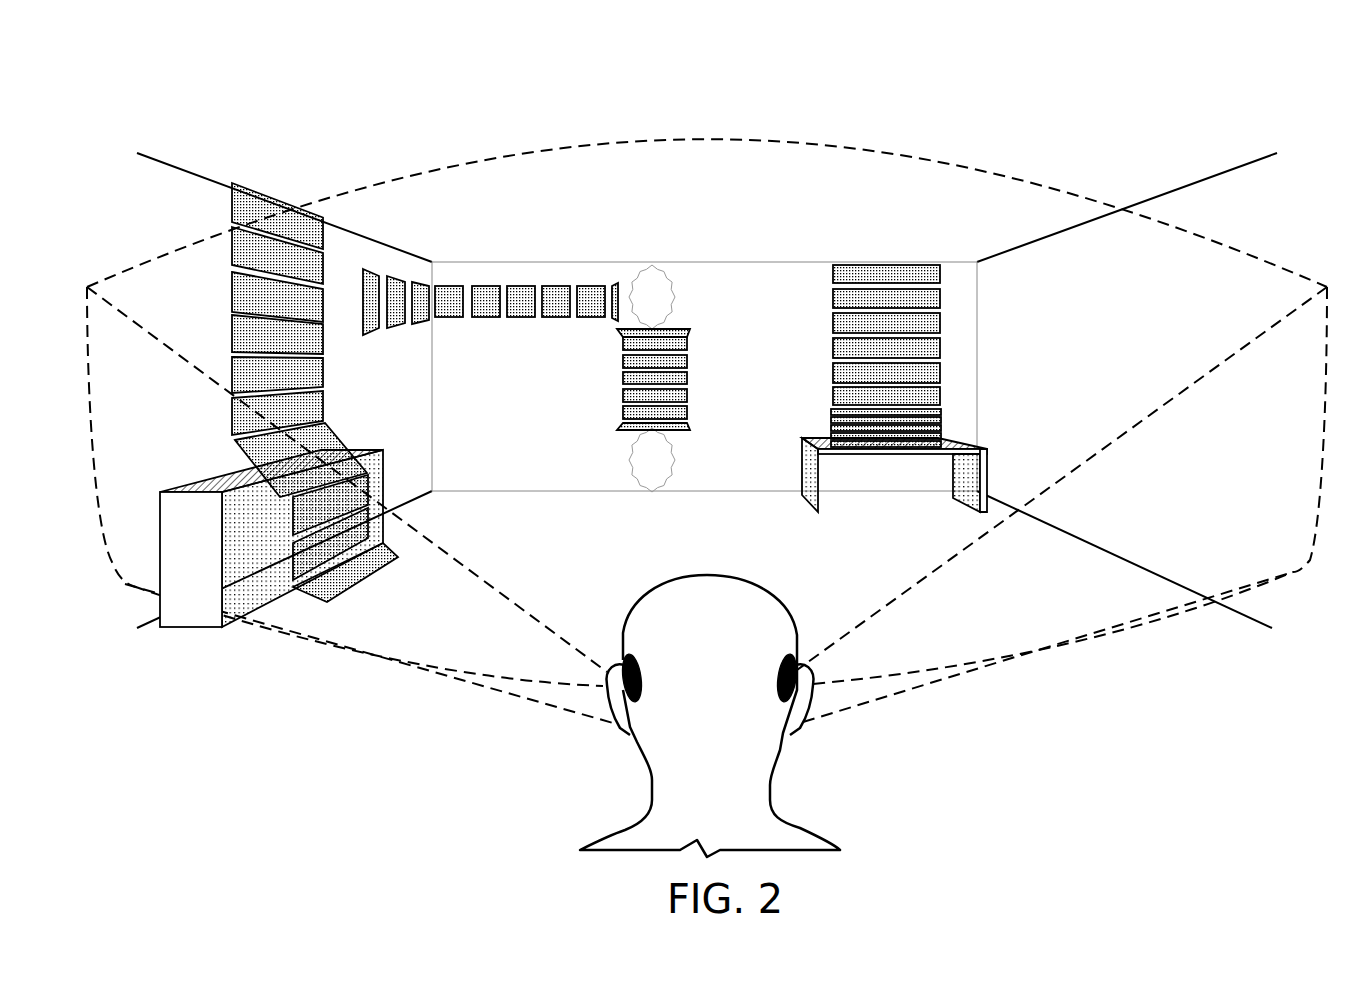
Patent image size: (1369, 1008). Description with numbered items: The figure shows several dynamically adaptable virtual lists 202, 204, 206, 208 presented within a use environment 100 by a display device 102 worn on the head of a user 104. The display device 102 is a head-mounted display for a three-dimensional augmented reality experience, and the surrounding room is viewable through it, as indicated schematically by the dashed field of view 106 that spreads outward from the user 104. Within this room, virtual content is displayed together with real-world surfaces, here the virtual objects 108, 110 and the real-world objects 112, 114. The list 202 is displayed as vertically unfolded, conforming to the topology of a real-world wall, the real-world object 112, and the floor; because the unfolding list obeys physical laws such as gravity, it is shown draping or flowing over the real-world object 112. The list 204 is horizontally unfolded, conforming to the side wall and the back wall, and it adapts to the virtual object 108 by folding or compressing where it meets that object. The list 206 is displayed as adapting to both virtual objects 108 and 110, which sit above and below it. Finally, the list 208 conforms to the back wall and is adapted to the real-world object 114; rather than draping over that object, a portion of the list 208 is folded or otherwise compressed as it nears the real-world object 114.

The use environment 100 is at (1232, 112).
The display device 102 is at (628, 735).
The user 104 is at (728, 695).
The field of view 106 is at (637, 140).
The virtual object 108 is at (688, 298).
The virtual object 110 is at (688, 458).
The real-world object 112 is at (185, 483).
The real-world object 114 is at (817, 438).
The dynamically adaptable virtual list 202 is at (232, 292).
The dynamically adaptable virtual list 204 is at (485, 317).
The dynamically adaptable virtual list 206 is at (690, 377).
The dynamically adaptable virtual list 208 is at (833, 327).